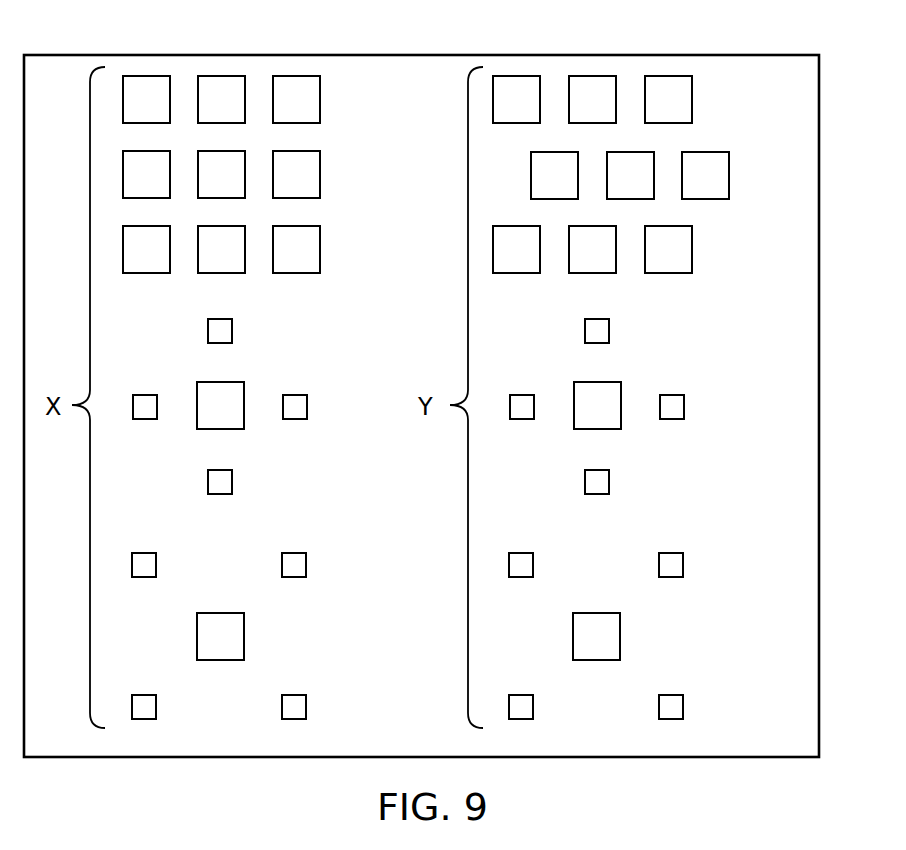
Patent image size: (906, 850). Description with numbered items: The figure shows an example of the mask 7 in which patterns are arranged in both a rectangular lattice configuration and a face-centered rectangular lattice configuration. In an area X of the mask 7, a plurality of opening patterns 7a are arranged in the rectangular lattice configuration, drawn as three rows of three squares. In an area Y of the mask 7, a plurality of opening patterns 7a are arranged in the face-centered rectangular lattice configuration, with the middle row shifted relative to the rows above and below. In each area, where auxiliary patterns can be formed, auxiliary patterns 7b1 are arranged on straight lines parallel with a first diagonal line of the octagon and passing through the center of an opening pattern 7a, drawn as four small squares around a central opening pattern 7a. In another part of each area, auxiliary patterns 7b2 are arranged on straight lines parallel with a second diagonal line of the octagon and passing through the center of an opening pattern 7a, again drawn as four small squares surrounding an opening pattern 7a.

The mask 7 is at (820, 170).
The opening pattern 7a is at (320, 97).
The auxiliary pattern 7b1 is at (232, 332).
The auxiliary pattern 7b2 is at (156, 565).